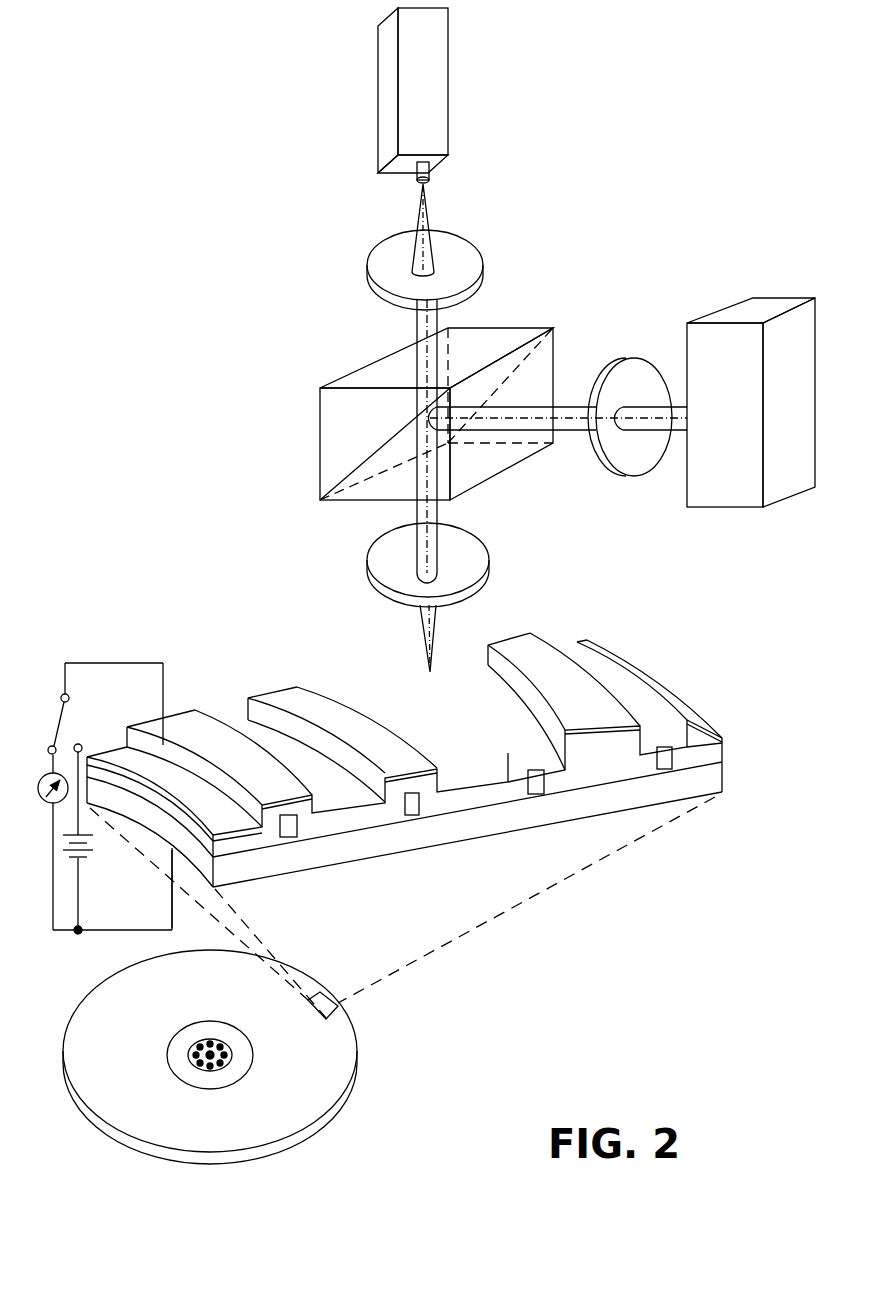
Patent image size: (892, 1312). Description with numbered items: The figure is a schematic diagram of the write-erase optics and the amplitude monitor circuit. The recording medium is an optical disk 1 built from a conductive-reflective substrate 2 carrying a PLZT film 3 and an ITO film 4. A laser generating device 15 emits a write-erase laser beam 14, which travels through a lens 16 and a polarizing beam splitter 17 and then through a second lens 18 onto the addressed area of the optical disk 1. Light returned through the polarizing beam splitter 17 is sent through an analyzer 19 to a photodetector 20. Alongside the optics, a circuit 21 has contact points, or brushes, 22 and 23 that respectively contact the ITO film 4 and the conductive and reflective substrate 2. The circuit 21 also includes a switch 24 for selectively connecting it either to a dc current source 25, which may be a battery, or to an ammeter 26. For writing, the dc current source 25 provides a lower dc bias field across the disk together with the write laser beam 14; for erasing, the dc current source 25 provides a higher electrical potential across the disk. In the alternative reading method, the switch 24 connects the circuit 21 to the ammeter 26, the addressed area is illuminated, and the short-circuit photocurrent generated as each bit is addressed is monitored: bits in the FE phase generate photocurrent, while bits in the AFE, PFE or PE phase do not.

The optical disk 1 is at (426, 789).
The conductive-reflective substrate 2 is at (378, 840).
The PLZT film 3 is at (622, 772).
The ITO film 4 is at (700, 735).
The write-erase laser beam 14 is at (433, 213).
The laser generating device 15 is at (452, 62).
The lens 16 is at (367, 250).
The polarizing beam splitter 17 is at (505, 323).
The lens 18 is at (490, 582).
The analyzer 19 is at (625, 485).
The photodetector 20 is at (787, 503).
The circuit 21 is at (115, 660).
The contact point 22 is at (163, 880).
The contact point 23 is at (165, 777).
The switch 24 is at (75, 695).
The dc current source 25 is at (87, 860).
The ammeter 26 is at (43, 773).